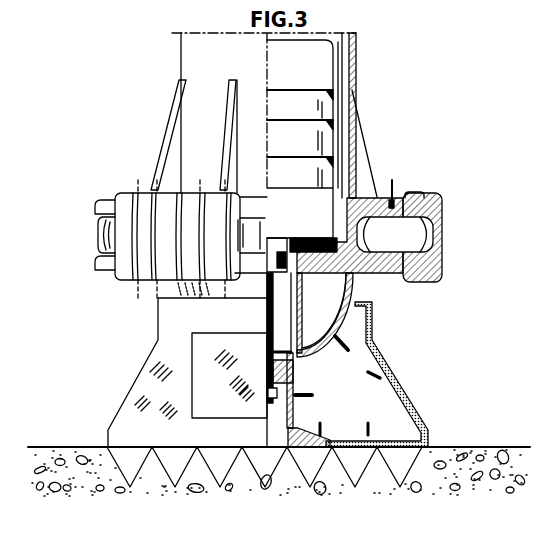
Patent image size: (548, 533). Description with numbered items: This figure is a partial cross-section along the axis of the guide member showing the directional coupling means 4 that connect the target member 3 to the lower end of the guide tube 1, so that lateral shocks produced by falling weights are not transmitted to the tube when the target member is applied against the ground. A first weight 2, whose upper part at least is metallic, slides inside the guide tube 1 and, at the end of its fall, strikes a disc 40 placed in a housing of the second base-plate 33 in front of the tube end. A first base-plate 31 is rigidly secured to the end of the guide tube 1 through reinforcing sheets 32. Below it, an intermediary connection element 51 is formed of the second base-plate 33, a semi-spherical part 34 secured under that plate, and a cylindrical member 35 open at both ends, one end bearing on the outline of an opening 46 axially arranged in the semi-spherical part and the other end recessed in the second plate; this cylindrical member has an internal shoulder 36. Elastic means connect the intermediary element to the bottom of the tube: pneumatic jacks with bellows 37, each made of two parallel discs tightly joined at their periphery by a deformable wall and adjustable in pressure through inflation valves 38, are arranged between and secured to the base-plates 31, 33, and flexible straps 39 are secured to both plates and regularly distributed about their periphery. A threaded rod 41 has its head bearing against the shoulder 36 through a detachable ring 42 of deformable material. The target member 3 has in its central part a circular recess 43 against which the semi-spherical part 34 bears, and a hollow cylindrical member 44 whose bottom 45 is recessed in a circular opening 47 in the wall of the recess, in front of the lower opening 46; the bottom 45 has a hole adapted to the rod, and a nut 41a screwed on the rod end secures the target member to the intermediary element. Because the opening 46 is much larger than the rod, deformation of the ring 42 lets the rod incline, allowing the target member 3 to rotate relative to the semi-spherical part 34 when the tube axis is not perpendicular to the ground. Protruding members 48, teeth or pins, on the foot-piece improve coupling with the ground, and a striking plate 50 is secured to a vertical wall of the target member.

The guide tube 1 is at (181, 56).
The first weight 2 is at (309, 65).
The target member 3 is at (142, 399).
The directional coupling means 4 is at (70, 143).
The first base-plate 31 is at (100, 206).
The reinforcing sheets 32 is at (175, 105).
The second base-plate 33 is at (100, 268).
The semi-spherical part 34 is at (357, 286).
The cylindrical member 35 is at (303, 310).
The internal shoulder 36 is at (302, 290).
The pneumatic jacks with bellows 37 is at (410, 238).
The inflation valves 38 is at (390, 178).
The flexible straps 39 is at (423, 192).
The disc 40 is at (307, 238).
The threaded rod 41 is at (268, 240).
The nut 41a is at (268, 403).
The detachable ring 42 is at (284, 292).
The circular recess 43 is at (352, 322).
The hollow cylindrical member 44 is at (294, 421).
The bottom 45 is at (294, 383).
The opening 46 is at (289, 353).
The circular opening 47 is at (294, 372).
The protruding members 48 is at (393, 460).
The striking plate 50 is at (200, 368).
The intermediary connection element 51 is at (165, 292).